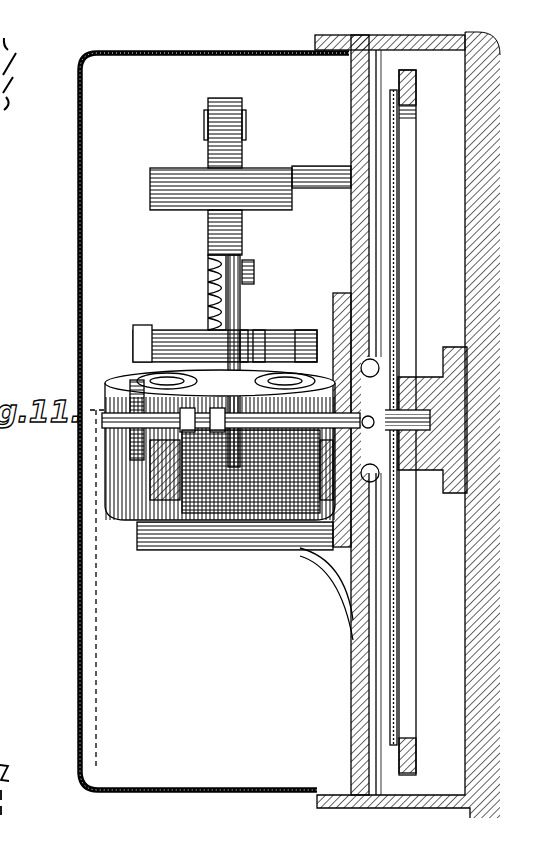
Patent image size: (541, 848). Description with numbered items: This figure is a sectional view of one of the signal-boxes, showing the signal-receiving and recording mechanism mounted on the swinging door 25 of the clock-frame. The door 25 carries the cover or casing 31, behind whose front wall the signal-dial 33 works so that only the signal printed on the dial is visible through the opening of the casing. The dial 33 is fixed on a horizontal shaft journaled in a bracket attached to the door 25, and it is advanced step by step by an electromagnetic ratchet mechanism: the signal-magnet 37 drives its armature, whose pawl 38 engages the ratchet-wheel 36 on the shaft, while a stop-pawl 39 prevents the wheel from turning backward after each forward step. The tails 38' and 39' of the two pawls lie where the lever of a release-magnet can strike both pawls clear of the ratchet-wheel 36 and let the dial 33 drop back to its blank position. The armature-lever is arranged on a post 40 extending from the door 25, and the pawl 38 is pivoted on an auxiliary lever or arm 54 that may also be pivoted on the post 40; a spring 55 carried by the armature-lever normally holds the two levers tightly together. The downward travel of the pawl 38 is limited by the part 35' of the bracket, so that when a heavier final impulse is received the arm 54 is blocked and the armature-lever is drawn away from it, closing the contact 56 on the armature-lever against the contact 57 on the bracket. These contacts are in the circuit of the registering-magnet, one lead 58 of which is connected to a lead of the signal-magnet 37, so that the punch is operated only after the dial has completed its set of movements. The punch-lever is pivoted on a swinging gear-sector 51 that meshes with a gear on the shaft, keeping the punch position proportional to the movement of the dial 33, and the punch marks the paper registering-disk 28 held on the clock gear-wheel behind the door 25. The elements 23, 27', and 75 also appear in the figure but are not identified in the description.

The cover or casing 31 is at (84, 190).
The signal-dial 33 is at (98, 655).
The swinging door 25 is at (353, 690).
The rod 23 is at (398, 642).
The bar 27' is at (429, 422).
The registering-disk 28 is at (403, 395).
The cross bar 75 is at (221, 211).
The post 40 is at (315, 177).
The tail of pawl 38' is at (201, 278).
The pawl 38 is at (208, 361).
The tail of stop-pawl 39' is at (261, 256).
The stop part of bracket 35' is at (225, 330).
The contact-point 56 is at (140, 340).
The stop-pawl 39 is at (278, 331).
The ratchet-wheel 36 is at (300, 345).
The contact-point 57 is at (105, 392).
The signal-magnet 37 is at (122, 382).
The spring 55 is at (231, 460).
The lead 58 is at (190, 470).
The auxiliary lever or arm 54 is at (311, 470).
The swinging sector 51 is at (295, 548).